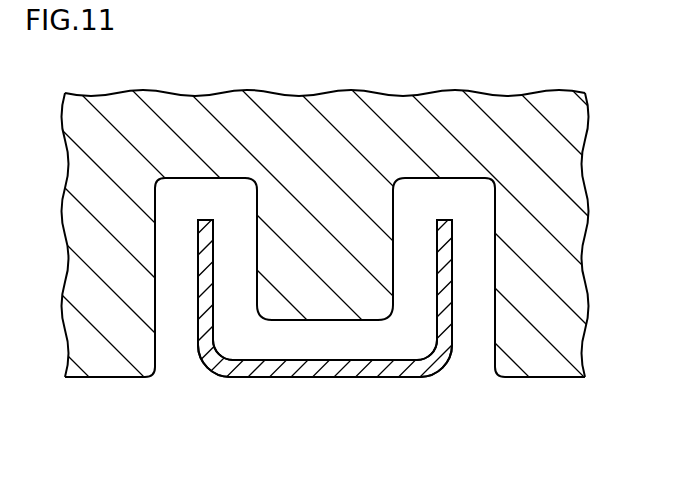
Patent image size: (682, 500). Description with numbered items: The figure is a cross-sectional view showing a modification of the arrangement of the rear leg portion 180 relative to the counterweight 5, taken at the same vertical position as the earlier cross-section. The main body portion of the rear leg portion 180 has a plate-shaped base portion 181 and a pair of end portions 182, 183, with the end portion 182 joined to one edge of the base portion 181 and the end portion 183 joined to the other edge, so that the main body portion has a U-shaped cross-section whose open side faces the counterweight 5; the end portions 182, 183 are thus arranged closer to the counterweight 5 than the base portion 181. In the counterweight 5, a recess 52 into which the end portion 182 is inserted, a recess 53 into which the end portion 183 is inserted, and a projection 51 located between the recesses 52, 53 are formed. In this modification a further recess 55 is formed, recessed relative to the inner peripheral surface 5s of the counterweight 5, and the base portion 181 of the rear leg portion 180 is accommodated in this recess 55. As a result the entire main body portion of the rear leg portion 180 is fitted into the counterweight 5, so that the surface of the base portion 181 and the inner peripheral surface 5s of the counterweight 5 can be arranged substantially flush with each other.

The counterweight 5 is at (397, 126).
The inner peripheral surface 5s is at (105, 378).
The projection 51 is at (302, 245).
The recess 52 is at (205, 200).
The recess 53 is at (444, 200).
The recess 55 is at (328, 340).
The rear leg portion 180 is at (402, 379).
The base portion 181 is at (328, 378).
The end portion 182 is at (205, 297).
The end portion 183 is at (445, 297).